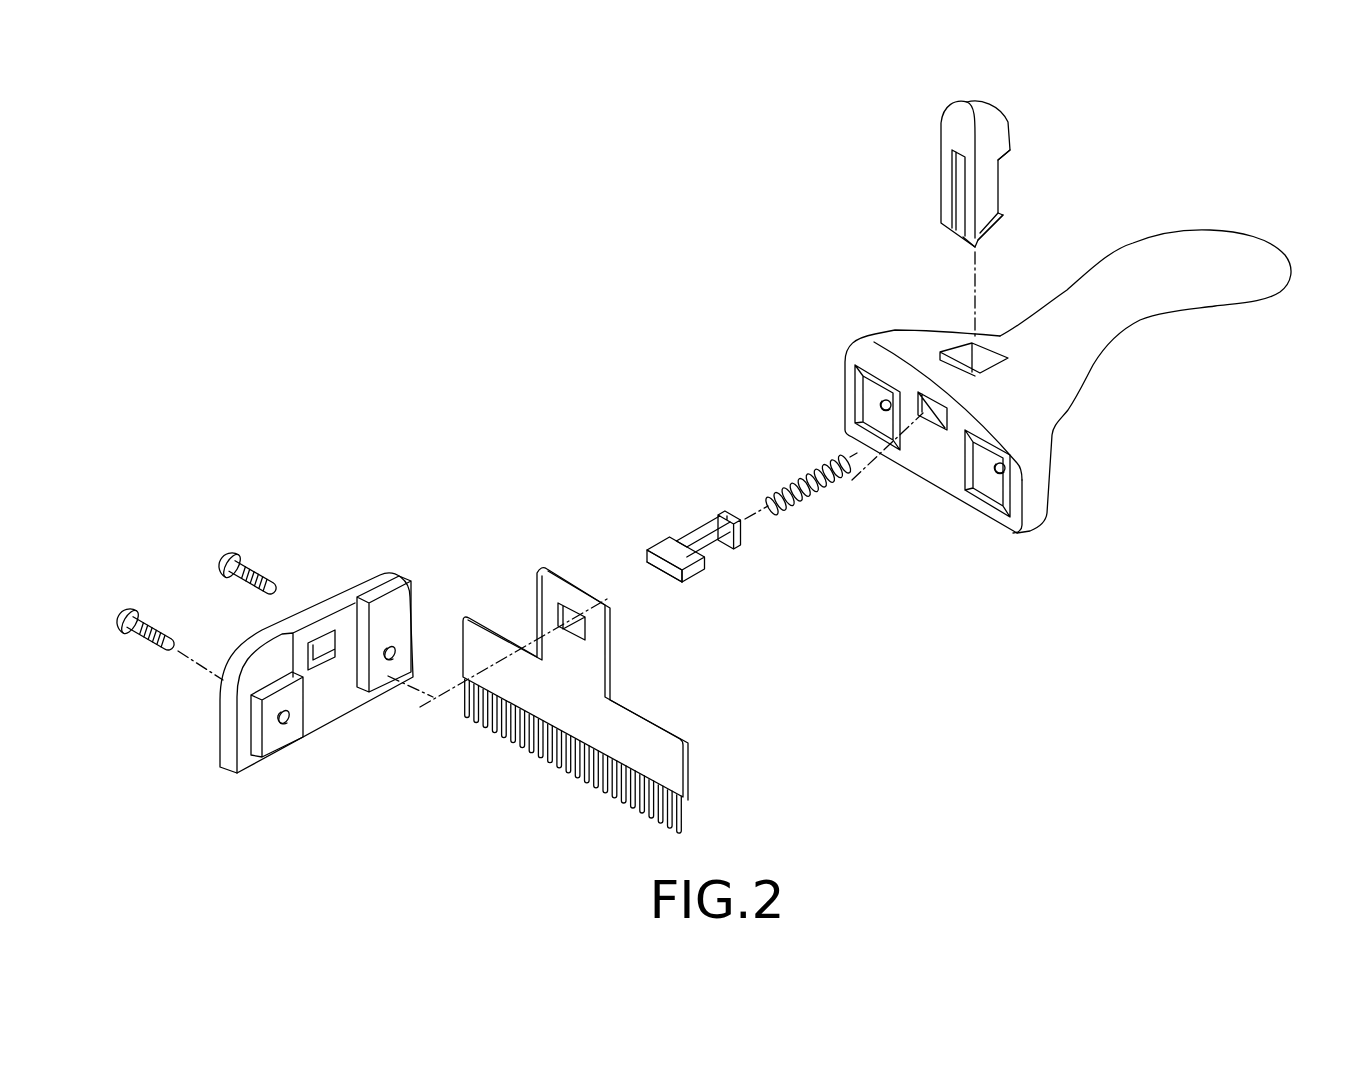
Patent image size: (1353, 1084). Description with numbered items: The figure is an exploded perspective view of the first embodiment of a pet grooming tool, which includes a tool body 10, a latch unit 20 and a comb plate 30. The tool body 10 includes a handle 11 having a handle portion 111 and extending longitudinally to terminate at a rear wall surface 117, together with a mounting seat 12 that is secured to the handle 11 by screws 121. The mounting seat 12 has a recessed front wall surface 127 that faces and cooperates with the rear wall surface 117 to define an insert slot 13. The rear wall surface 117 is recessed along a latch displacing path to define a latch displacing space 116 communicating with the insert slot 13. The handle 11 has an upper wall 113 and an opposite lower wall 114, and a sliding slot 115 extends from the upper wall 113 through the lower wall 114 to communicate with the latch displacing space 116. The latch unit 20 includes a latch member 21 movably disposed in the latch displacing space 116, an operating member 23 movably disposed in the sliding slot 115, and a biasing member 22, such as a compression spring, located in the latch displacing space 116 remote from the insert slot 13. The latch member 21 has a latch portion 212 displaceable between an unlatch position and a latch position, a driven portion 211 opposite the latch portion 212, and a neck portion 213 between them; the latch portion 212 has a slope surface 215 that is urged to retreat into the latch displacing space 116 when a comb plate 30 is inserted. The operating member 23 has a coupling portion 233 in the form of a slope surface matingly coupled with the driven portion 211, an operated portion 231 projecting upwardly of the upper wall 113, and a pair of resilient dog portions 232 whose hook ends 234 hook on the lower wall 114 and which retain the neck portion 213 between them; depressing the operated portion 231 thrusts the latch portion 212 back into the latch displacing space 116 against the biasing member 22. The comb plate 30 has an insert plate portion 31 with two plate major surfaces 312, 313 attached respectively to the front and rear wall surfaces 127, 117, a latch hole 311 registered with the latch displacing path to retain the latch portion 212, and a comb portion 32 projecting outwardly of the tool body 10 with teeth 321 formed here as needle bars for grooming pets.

The tool body 10 is at (1068, 388).
The handle 11 is at (1068, 404).
The handle portion 111 is at (1225, 254).
The upper wall 113 is at (993, 373).
The lower wall 114 is at (1031, 528).
The sliding slot 115 is at (988, 360).
The latch displacing space 116 is at (937, 418).
The rear wall surface 117 is at (942, 478).
The mounting seat 12 is at (316, 623).
The screws 121 is at (253, 568).
The insert slot 13 is at (346, 571).
The front wall surface 127 is at (342, 616).
The latch unit 20 is at (691, 527).
The latch member 21 is at (668, 563).
The driven portion 211 is at (722, 518).
The latch portion 212 is at (680, 572).
The neck portion 213 is at (695, 536).
The slope surface 215 is at (668, 574).
The biasing member 22 is at (810, 498).
The operating member 23 is at (975, 213).
The operated portion 231 is at (977, 112).
The resilient dog portions 232 is at (973, 193).
The coupling portion 233 is at (1003, 158).
The hook ends 234 is at (993, 231).
The comb plate 30 is at (657, 676).
The insert plate portion 31 is at (575, 641).
The latch hole 311 is at (568, 612).
The plate major surface 312 is at (541, 612).
The plate major surface 313 is at (612, 667).
The comb portion 32 is at (666, 774).
The teeth 321 is at (682, 834).